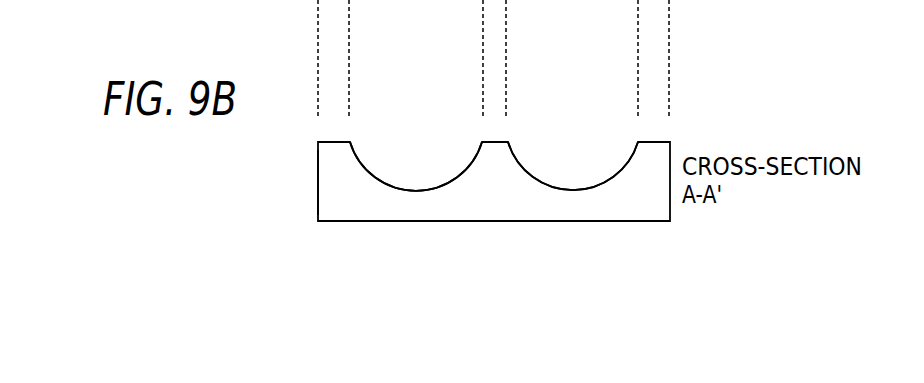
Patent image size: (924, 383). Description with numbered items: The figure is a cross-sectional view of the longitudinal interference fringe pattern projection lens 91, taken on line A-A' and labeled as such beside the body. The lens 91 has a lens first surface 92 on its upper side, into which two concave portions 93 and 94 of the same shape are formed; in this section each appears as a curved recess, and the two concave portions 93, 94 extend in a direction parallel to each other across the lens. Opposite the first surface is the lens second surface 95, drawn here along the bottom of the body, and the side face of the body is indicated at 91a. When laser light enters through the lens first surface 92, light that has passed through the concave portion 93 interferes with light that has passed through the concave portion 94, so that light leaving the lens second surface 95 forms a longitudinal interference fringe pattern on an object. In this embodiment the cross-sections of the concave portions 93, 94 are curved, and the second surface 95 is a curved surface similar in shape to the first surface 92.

The longitudinal interference fringe pattern projection lens 91 is at (697, 134).
The side wall of substrate 91a is at (327, 185).
The lens first surface 92 is at (338, 143).
The concave portion 93 is at (462, 177).
The concave portion 94 is at (617, 175).
The lens second surface 95 is at (412, 222).